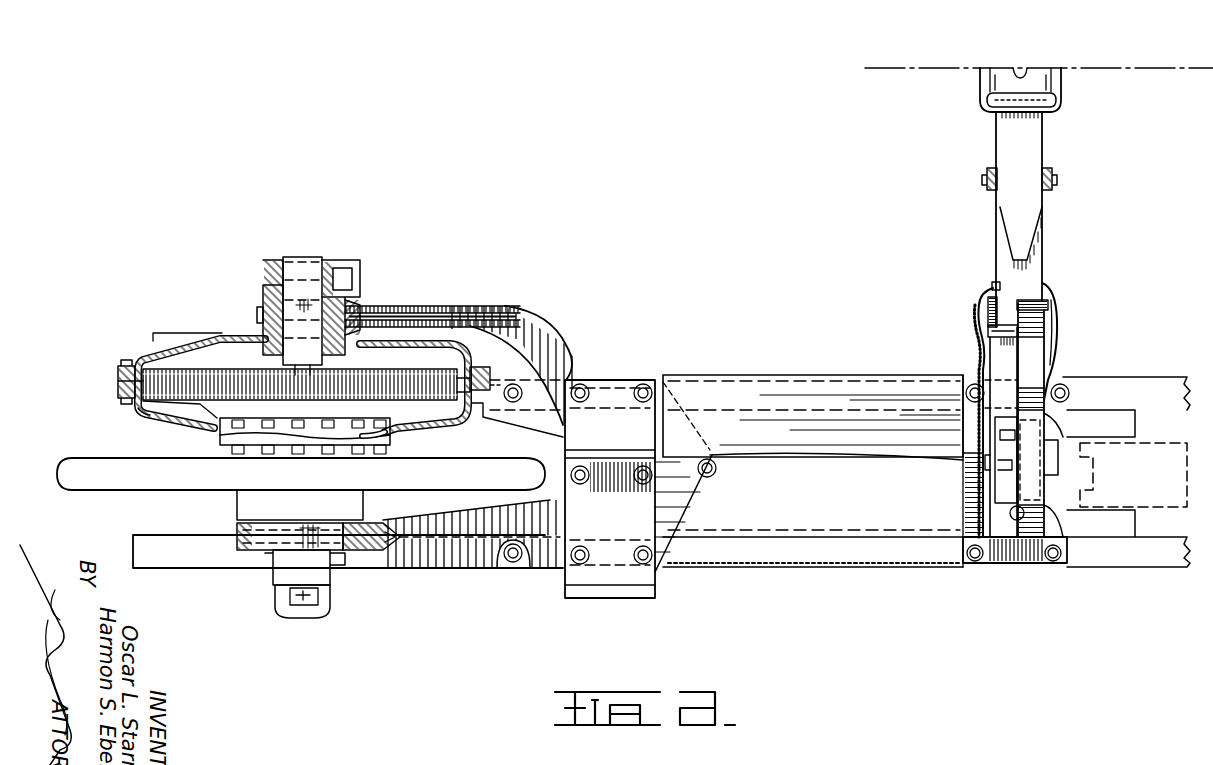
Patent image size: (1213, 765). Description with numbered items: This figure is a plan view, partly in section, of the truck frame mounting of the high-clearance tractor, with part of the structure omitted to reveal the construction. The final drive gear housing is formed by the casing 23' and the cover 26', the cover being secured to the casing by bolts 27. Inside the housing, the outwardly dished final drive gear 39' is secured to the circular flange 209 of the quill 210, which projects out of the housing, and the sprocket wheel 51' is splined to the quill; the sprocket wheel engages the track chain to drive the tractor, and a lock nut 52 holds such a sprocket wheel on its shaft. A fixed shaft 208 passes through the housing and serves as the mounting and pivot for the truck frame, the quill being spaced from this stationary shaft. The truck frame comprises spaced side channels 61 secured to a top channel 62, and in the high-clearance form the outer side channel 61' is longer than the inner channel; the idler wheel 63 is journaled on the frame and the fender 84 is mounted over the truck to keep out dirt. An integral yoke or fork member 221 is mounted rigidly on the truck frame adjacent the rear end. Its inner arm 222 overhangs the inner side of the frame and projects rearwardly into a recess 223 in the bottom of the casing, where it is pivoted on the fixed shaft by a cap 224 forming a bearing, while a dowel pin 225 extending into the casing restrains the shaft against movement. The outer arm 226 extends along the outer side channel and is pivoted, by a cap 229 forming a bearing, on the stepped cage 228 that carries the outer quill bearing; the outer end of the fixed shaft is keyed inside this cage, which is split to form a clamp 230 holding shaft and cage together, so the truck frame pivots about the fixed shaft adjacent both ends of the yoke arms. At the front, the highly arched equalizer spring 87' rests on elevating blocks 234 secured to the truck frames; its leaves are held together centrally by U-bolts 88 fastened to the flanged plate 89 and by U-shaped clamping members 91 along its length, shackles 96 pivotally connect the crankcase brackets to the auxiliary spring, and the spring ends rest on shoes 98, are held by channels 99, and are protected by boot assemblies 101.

The casing 23' is at (284, 345).
The cover 26' is at (115, 429).
The bolts 27 is at (120, 368).
The final drive gear 39' is at (327, 329).
The sprocket wheel 51' is at (301, 489).
The lock nut 52 is at (312, 618).
The side channels 61 is at (1126, 369).
The outer side channel 61' is at (1126, 562).
The top channel 62 is at (820, 519).
The idler wheel 63 is at (1165, 443).
The fender 84 is at (815, 380).
The equalizer spring 87' is at (976, 219).
The U-bolts 88 is at (1040, 98).
The flanged plate 89 is at (988, 95).
The U-shaped clamping members 91 is at (990, 330).
The shackles 96 is at (985, 172).
The shoes 98 is at (1005, 500).
The channels 99 is at (1000, 480).
The boot assemblies 101 is at (1046, 360).
The fixed shaft 208 is at (300, 257).
The circular flange 209 is at (222, 425).
The quill 210 is at (400, 440).
The yoke or fork member 221 is at (562, 410).
The inner arm 222 is at (350, 312).
The recess 223 is at (350, 300).
The cap 224 is at (270, 300).
The dowel pin 225 is at (335, 262).
The outer arm 226 is at (362, 548).
The stepped cage 228 is at (362, 525).
The cap 229 is at (250, 552).
The clamp 230 is at (330, 590).
The elevating blocks 234 is at (972, 520).